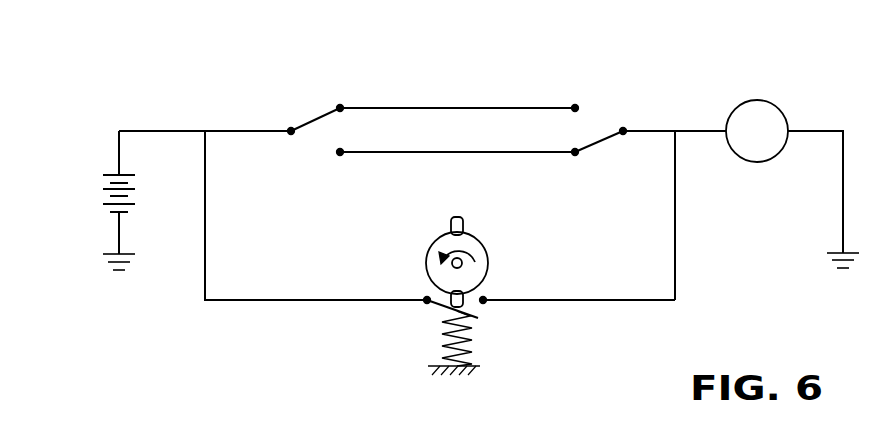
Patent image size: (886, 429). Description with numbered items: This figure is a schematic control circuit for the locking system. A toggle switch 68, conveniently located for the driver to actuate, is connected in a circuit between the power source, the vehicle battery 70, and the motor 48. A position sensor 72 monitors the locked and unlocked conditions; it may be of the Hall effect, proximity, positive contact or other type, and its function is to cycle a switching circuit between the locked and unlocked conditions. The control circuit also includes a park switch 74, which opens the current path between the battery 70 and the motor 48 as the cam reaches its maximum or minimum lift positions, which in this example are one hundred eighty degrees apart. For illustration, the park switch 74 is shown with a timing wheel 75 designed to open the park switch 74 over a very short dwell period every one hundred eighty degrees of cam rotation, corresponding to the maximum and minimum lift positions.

The vehicle battery 70 is at (114, 174).
The toggle switch 68 is at (303, 127).
The position sensor 72 is at (624, 128).
The motor 48 is at (782, 104).
The timing wheel 75 is at (488, 247).
The park switch 74 is at (438, 307).